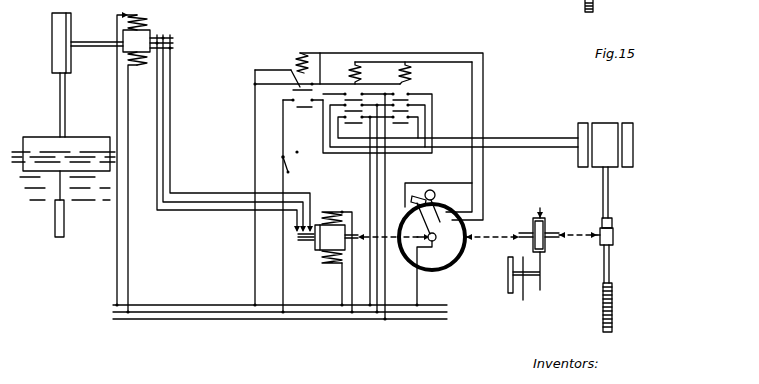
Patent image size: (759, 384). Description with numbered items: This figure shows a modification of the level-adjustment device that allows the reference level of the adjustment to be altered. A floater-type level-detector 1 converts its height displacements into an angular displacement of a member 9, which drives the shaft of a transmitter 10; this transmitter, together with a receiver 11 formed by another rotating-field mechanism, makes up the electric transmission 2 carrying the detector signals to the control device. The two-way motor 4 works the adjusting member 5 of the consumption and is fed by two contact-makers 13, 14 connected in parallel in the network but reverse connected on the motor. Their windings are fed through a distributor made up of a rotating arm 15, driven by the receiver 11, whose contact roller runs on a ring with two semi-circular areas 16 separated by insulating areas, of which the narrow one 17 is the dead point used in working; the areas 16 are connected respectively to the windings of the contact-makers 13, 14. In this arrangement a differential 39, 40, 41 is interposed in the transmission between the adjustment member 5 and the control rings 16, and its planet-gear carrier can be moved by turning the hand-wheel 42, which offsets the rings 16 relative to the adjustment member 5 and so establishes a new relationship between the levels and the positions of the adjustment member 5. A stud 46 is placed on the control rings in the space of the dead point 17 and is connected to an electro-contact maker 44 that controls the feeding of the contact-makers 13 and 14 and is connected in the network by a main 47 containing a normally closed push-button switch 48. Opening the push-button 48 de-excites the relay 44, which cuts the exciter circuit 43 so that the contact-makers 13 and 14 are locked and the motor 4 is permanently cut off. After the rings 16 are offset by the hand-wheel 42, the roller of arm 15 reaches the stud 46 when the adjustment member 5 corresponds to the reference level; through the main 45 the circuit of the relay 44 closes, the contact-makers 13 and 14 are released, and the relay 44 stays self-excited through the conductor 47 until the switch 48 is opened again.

The level-detector 1 is at (54, 54).
The electric transmission 2 is at (166, 172).
The motor 4 is at (603, 127).
The adjusting member 5 is at (612, 313).
The member 9 is at (88, 41).
The transmitter 10 is at (138, 40).
The receiver 11 is at (327, 243).
The contact-maker 13 is at (355, 62).
The contact-maker 14 is at (404, 66).
The rotating arm 15 is at (412, 193).
The semi-circular areas 16 is at (449, 208).
The insulating area 17 is at (435, 191).
The differential 39 is at (544, 212).
The differential 40 is at (548, 232).
The differential 41 is at (528, 232).
The hand-wheel 42 is at (510, 286).
The exciter circuit 43 is at (266, 86).
The electro-contact maker 44 is at (299, 85).
The main 45 is at (485, 52).
The stud 46 is at (437, 236).
The main 47 is at (284, 139).
The push-button switch 48 is at (289, 166).